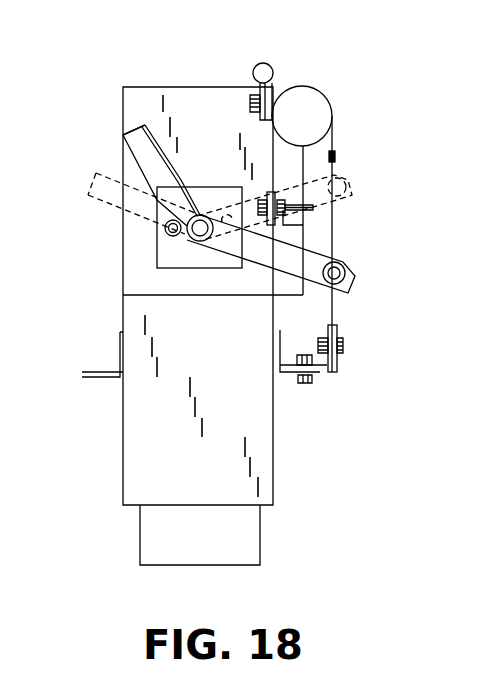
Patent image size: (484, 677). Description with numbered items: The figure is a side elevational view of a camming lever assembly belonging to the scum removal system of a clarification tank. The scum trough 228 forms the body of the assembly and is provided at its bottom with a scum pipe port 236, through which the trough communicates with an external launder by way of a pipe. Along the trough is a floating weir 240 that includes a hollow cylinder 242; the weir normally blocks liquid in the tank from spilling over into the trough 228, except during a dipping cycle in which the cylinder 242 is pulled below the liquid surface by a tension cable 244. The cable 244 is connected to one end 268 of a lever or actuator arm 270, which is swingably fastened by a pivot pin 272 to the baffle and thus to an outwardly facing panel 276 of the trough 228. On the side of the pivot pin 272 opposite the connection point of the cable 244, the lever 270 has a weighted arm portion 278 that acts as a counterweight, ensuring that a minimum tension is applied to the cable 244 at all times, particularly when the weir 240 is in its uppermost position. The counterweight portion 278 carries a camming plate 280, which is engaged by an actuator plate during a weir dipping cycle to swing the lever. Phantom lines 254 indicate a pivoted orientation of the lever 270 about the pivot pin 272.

The scum trough 228 is at (118, 487).
The scum pipe port 236 is at (247, 537).
The floating weir 240 is at (294, 78).
The hollow cylinder 242 is at (313, 88).
The tension cable 244 is at (335, 318).
The phantom lines 254 is at (113, 202).
The end of lever arm 268 is at (350, 278).
The lever or actuator arm 270 is at (288, 232).
The pivot pin 272 is at (192, 240).
The outwardly facing panel 276 is at (199, 203).
The counterweight arm portion 278 is at (123, 136).
The camming plate 280 is at (152, 130).